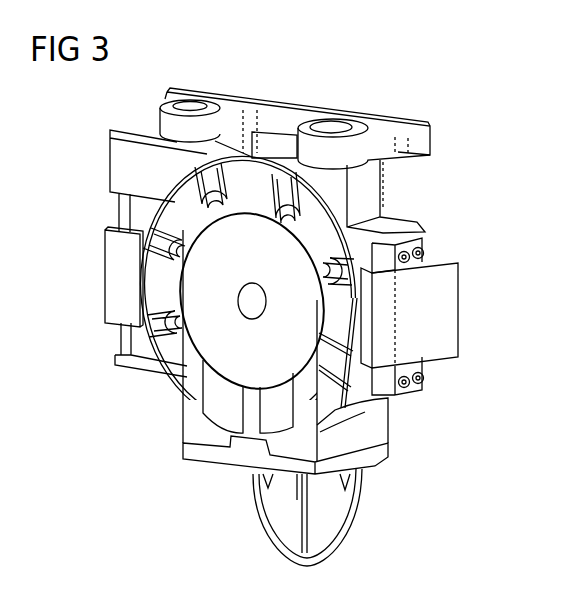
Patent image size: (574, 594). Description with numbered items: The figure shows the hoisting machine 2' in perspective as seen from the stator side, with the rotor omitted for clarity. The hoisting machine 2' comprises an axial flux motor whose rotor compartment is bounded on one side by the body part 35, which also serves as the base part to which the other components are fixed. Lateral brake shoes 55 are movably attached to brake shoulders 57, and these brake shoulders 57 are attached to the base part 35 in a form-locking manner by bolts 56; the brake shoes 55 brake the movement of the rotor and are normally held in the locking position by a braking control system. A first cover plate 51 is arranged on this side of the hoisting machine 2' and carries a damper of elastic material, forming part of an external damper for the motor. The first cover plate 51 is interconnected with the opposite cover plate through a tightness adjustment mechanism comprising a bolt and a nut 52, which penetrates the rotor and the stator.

The hoisting machine 2' is at (277, 311).
The body part 35 is at (258, 186).
The first cover plate 51 is at (224, 346).
The nut 52 is at (249, 301).
The brake shoe 55 is at (110, 322).
The bolt 56 is at (424, 252).
The brake shoulder 57 is at (423, 227).